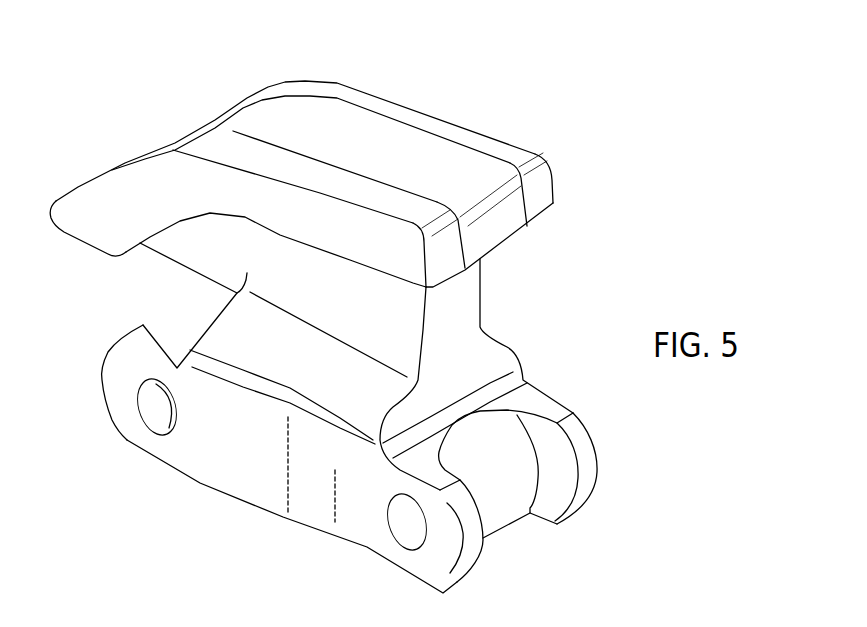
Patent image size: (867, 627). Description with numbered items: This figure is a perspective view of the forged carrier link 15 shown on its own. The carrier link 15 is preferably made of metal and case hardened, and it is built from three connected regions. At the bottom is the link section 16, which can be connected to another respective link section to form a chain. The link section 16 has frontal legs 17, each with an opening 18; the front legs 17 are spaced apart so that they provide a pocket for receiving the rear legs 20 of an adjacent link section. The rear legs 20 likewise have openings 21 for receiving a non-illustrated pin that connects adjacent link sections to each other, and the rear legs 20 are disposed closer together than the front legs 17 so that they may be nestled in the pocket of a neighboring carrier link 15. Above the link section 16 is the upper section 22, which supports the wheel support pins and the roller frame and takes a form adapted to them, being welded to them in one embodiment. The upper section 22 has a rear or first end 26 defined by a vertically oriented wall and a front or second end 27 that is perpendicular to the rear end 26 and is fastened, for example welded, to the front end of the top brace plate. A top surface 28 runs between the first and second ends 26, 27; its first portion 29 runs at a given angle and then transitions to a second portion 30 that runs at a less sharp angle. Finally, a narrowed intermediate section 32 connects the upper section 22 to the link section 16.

The carrier link 15 is at (546, 67).
The link section 16 is at (298, 490).
The frontal legs 17 is at (110, 378).
The opening 18 is at (150, 417).
The rear legs 20 is at (585, 495).
The openings 21 is at (407, 522).
The upper section 22 is at (437, 128).
The rear end 26 is at (487, 232).
The front end 27 is at (75, 235).
The top surface 28 is at (308, 122).
The first portion 29 is at (167, 147).
The second portion 30 is at (433, 190).
The narrowed intermediate section 32 is at (457, 315).